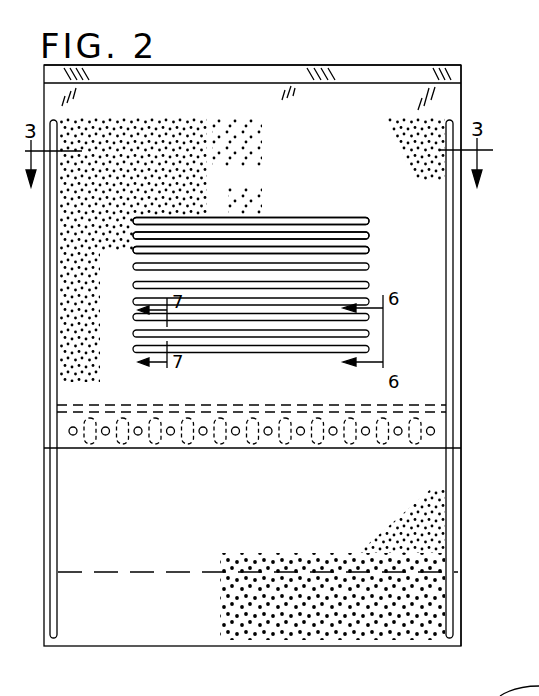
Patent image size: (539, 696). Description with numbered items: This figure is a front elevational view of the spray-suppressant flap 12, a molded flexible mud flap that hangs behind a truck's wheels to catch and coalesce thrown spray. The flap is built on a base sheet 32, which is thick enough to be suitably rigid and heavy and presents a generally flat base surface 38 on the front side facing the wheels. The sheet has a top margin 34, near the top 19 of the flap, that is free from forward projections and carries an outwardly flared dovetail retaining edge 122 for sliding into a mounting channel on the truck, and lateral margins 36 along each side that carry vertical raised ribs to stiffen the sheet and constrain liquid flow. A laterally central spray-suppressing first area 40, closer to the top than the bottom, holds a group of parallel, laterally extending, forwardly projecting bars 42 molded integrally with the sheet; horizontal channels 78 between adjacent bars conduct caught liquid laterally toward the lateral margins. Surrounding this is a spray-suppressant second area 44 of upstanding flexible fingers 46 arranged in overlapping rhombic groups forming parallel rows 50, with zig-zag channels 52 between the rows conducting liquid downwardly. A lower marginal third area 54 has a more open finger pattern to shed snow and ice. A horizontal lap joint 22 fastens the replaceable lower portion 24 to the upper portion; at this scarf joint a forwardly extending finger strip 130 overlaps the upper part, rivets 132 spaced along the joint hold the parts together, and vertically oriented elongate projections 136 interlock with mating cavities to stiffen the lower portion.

The spray-suppressant flap 12 is at (468, 86).
The top 19 is at (266, 64).
The retaining edge 122 is at (350, 72).
The top margin 34 is at (393, 92).
The channels 52 is at (158, 123).
The rows 50 is at (204, 122).
The lateral margins 36 is at (45, 307).
The base surface 38 is at (430, 212).
The base sheet 32 is at (463, 250).
The spray-suppressing first area 40 is at (293, 218).
The bars 42 is at (323, 236).
The horizontal channels 78 is at (255, 259).
The spray-suppressant second area 44 is at (420, 378).
The finger strip 130 is at (414, 405).
The lap joint 22 is at (70, 450).
The rivets 132 is at (267, 436).
The elongate projections 136 is at (317, 445).
The lower portion 24 is at (457, 516).
The third area 54 is at (80, 600).
The flexible fingers 46 is at (527, 497).